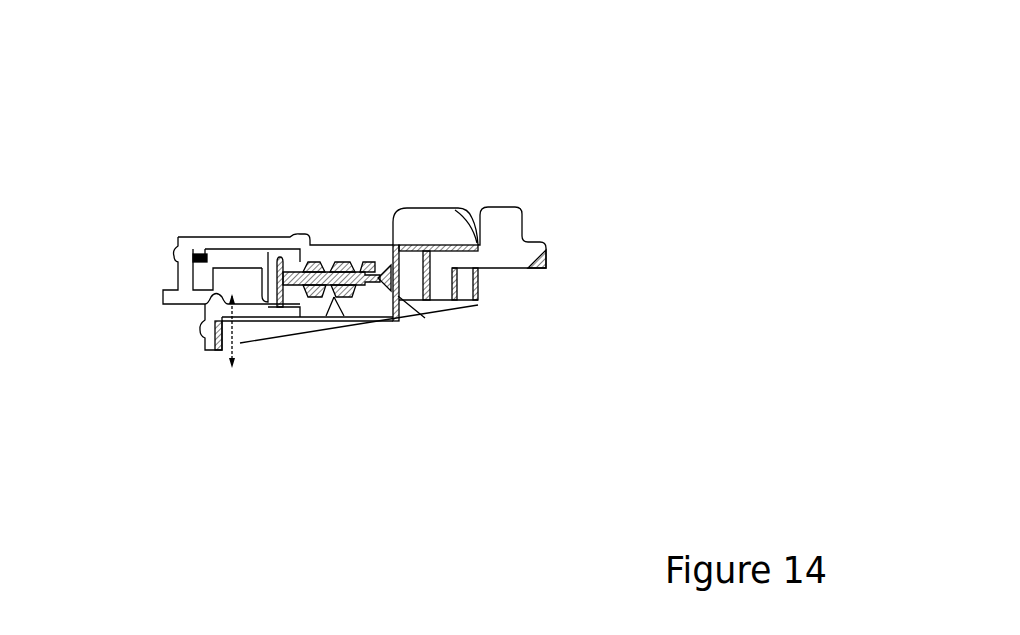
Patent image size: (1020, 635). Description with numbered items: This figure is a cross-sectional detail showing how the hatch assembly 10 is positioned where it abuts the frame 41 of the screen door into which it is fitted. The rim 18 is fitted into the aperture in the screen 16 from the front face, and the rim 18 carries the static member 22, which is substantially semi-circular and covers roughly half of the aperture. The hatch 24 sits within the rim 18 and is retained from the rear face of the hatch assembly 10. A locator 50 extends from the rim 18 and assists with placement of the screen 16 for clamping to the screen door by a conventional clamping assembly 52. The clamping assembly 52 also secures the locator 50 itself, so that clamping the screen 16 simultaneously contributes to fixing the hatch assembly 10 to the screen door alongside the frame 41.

The hatch assembly 10 is at (596, 163).
The screen 16 is at (290, 279).
The rim 18 is at (437, 220).
The static member 22 is at (465, 287).
The hatch 24 is at (513, 218).
The frame 41 is at (372, 253).
The locator 50 is at (395, 293).
The clamping assembly 52 is at (236, 226).